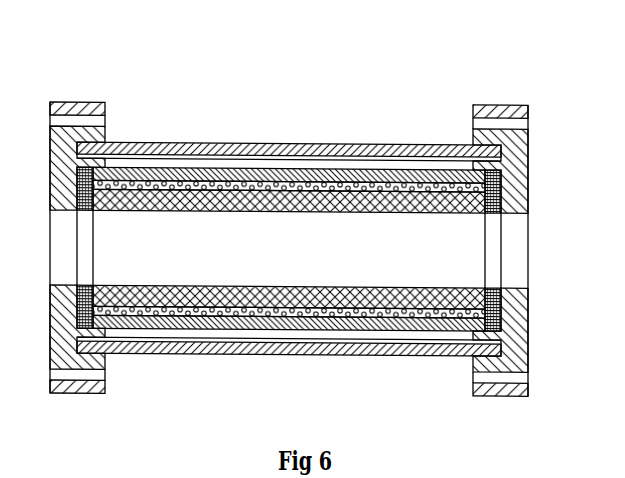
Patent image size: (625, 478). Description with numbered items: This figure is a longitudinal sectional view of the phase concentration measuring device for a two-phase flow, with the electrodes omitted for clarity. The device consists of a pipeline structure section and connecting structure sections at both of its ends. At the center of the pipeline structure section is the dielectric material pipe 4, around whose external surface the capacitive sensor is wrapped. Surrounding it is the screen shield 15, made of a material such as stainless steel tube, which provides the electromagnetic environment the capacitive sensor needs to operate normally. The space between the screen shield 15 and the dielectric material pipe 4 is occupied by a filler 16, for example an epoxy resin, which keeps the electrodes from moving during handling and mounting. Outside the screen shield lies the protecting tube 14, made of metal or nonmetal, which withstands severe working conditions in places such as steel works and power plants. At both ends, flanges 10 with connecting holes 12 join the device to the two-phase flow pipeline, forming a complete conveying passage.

The flange 10 is at (95, 108).
The connecting hole 12 is at (478, 117).
The protecting tube 14 is at (130, 147).
The screen shield 15 is at (190, 172).
The filler 16 is at (240, 185).
The dielectric material pipe 4 is at (419, 180).